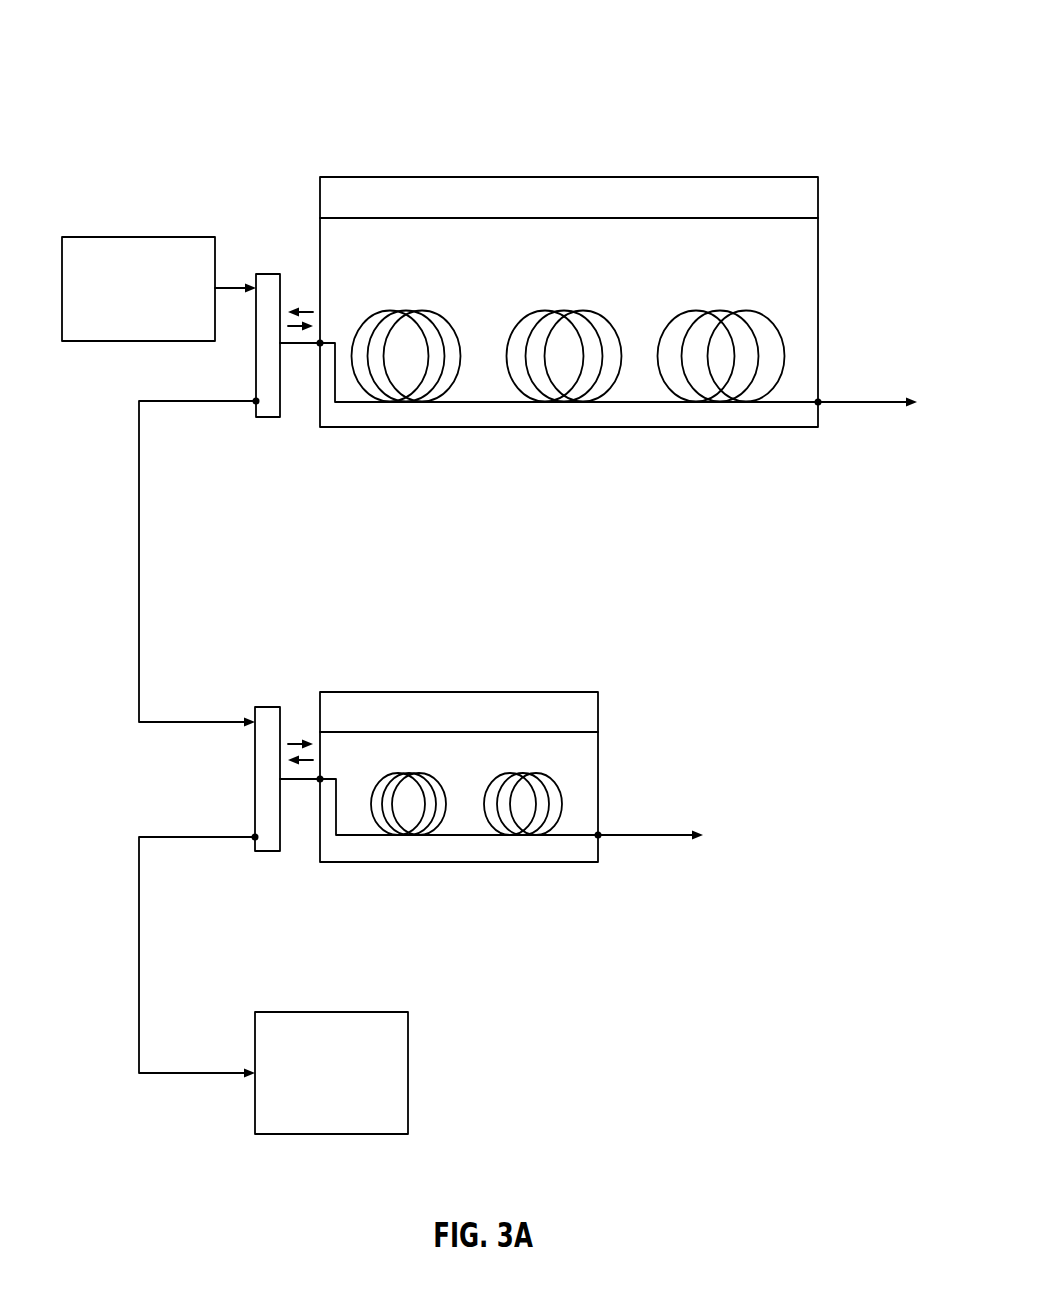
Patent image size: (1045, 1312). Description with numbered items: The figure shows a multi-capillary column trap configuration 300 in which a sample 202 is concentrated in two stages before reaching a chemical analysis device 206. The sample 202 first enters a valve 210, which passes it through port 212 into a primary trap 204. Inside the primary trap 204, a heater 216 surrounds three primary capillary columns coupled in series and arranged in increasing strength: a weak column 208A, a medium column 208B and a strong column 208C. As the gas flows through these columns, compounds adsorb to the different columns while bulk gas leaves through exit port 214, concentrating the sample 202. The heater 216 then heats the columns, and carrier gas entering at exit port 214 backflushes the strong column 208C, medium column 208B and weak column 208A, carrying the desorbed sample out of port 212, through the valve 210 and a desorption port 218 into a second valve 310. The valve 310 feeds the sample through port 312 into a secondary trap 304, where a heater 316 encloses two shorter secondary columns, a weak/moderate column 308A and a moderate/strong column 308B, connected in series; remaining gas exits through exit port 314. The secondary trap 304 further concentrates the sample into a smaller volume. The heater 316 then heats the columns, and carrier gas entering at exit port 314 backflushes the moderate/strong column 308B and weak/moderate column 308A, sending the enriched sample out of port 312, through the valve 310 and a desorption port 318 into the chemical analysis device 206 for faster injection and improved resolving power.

The multi-capillary column trap configuration 300 is at (140, 31).
The sample 202 is at (101, 236).
The primary trap 204 is at (819, 405).
The chemical analysis device 206 is at (275, 1012).
The weak column 208A is at (400, 413).
The medium column 208B is at (562, 413).
The strong column 208C is at (718, 413).
The valve 210 is at (268, 417).
The port 212 is at (321, 343).
The exit port 214 is at (819, 402).
The heater 216 is at (569, 302).
The desorption port 218 is at (256, 401).
The secondary trap 304 is at (600, 838).
The weak/moderate column 308A is at (408, 847).
The moderate/strong column 308B is at (525, 847).
The valve 310 is at (268, 851).
The port 312 is at (321, 778).
The exit port 314 is at (599, 835).
The heater 316 is at (459, 777).
The desorption port 318 is at (255, 837).